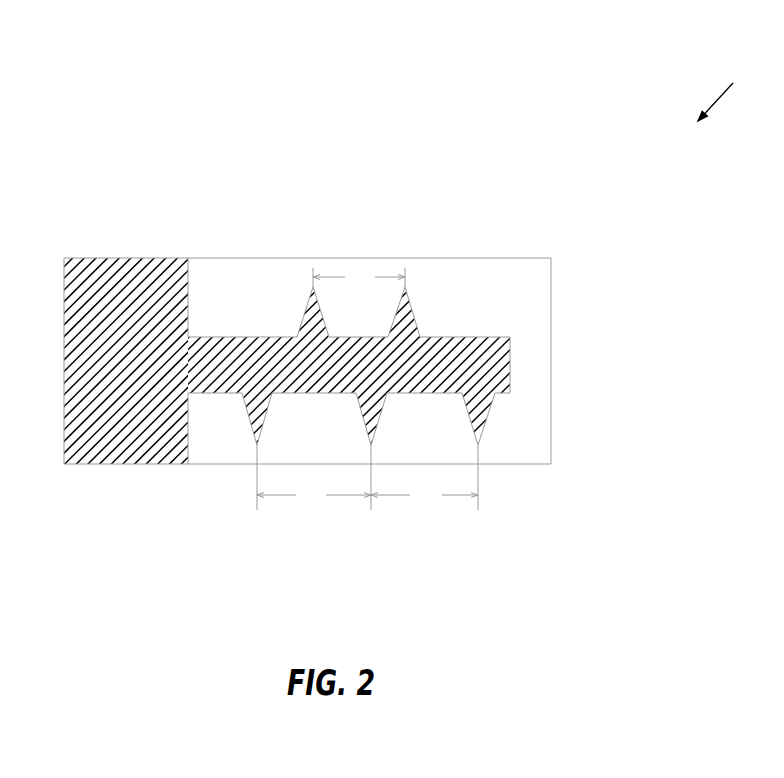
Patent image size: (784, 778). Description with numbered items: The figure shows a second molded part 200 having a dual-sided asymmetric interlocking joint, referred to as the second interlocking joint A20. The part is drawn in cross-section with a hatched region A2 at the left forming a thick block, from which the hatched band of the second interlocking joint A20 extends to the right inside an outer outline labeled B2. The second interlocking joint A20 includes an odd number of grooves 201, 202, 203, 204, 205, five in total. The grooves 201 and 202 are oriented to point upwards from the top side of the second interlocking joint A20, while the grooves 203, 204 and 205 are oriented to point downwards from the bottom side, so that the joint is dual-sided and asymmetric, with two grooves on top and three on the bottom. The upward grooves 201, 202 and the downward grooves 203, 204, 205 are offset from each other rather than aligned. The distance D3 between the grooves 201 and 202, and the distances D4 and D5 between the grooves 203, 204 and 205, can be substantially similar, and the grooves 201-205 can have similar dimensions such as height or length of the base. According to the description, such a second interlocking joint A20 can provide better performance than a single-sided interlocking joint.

The second molded part 200 is at (730, 92).
The first region (base block) A2 is at (100, 263).
The second region (outer boundary) B2 is at (535, 258).
The second interlocking joint A20 is at (473, 330).
The groove 201 is at (302, 309).
The groove 202 is at (401, 312).
The groove 203 is at (255, 417).
The groove 204 is at (365, 417).
The groove 205 is at (472, 417).
The distance between the grooves 201 and 202 D3 is at (359, 278).
The distance between the grooves 203 and 204 D4 is at (314, 478).
The distance between the grooves 204 and 205 D5 is at (424, 477).